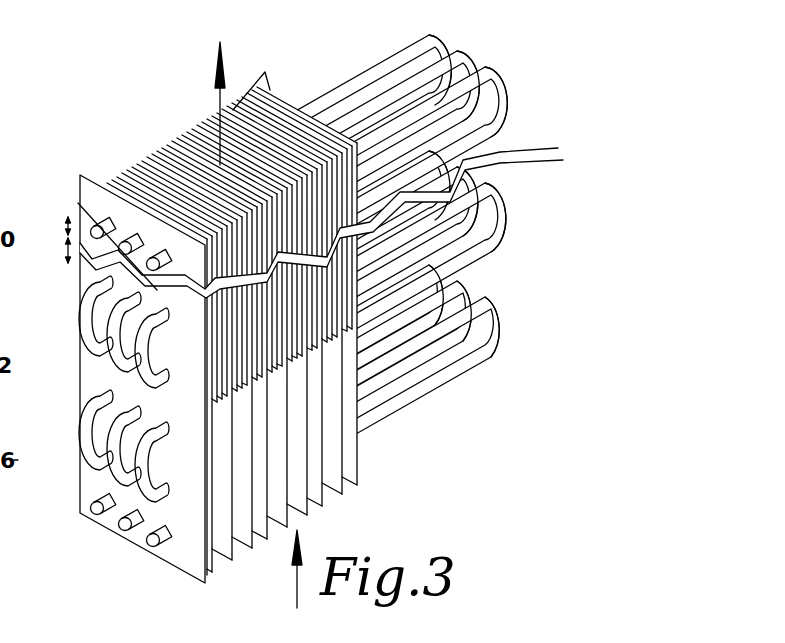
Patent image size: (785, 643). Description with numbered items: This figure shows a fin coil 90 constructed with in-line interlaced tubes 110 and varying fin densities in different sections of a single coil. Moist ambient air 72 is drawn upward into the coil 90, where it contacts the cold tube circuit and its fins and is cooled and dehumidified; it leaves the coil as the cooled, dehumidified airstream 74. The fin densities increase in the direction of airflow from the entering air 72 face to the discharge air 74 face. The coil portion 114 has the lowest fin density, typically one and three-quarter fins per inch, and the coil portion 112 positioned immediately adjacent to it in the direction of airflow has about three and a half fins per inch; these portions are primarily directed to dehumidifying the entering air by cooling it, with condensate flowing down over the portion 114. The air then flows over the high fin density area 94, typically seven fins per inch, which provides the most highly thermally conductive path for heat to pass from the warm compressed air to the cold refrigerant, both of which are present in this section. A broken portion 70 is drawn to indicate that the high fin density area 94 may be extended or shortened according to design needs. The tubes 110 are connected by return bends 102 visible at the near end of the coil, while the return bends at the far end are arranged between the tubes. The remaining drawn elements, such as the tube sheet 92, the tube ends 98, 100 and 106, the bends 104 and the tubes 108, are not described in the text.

The broken portion 70 is at (52, 241).
The moist ambient air 72 is at (280, 574).
The cooled, dehumidified airstream 74 is at (218, 102).
The coil 90 is at (152, 150).
The tube sheet 92 is at (85, 183).
The high fin density area 94 is at (265, 72).
The tube end 98 is at (100, 224).
The tube end 100 is at (97, 515).
The return bends 102 is at (85, 440).
The return bend 104 is at (98, 306).
The tube end 106 is at (163, 537).
The heat exchanger tubes 108 is at (385, 420).
The tubes 110 is at (500, 357).
The coil portion 112 is at (290, 432).
The coil portion 114 is at (305, 513).